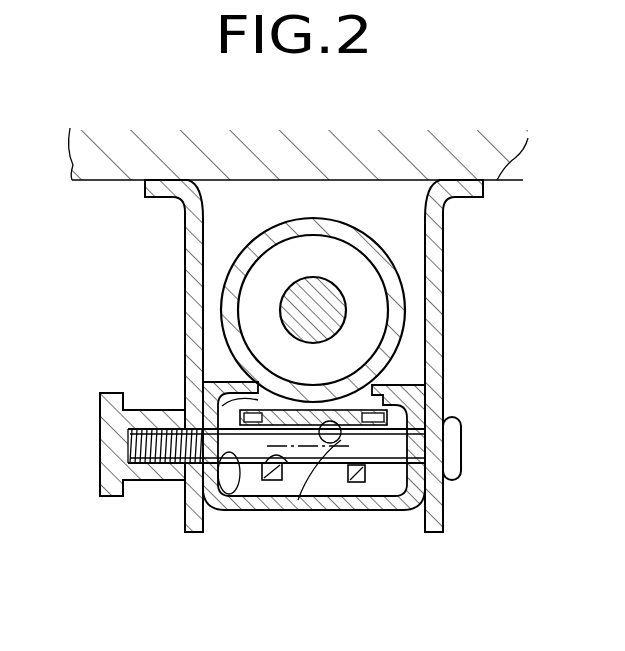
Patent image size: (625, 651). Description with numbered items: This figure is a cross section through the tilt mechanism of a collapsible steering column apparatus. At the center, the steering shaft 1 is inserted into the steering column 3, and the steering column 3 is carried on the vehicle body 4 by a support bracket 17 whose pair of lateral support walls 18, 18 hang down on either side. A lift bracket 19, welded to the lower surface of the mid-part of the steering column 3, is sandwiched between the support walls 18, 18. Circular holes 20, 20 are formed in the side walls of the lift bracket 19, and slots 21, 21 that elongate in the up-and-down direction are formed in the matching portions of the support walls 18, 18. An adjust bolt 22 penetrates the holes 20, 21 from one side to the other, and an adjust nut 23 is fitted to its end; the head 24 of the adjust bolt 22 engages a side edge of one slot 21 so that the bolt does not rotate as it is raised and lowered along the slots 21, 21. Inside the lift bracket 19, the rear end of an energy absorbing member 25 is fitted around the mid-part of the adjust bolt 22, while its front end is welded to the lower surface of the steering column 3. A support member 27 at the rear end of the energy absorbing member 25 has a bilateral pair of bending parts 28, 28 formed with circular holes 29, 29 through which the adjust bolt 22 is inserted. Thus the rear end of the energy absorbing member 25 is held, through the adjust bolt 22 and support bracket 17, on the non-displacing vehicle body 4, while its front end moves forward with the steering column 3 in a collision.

The steering shaft 1 is at (347, 315).
The steering column 3 is at (438, 234).
The vehicle body 4 is at (523, 178).
The support bracket 17 is at (390, 257).
The support wall 18 is at (189, 268).
The lift bracket 19 is at (400, 511).
The circular hole 20 is at (233, 510).
The slot 21 is at (184, 491).
The adjust bolt 22 is at (458, 432).
The adjust nut 23 is at (104, 478).
The head 24 is at (460, 472).
The energy absorbing member 25 is at (203, 394).
The support member 27 is at (366, 409).
The bending part 28 is at (360, 482).
The circular hole 29 is at (298, 500).